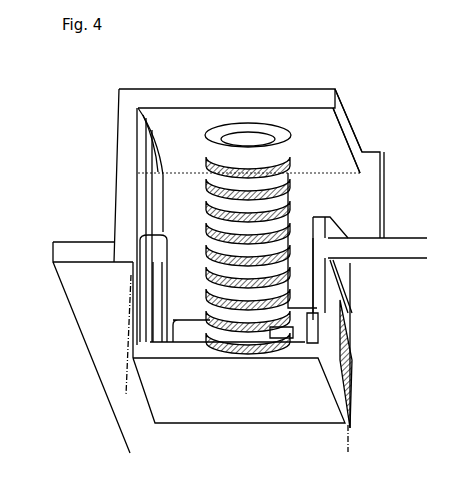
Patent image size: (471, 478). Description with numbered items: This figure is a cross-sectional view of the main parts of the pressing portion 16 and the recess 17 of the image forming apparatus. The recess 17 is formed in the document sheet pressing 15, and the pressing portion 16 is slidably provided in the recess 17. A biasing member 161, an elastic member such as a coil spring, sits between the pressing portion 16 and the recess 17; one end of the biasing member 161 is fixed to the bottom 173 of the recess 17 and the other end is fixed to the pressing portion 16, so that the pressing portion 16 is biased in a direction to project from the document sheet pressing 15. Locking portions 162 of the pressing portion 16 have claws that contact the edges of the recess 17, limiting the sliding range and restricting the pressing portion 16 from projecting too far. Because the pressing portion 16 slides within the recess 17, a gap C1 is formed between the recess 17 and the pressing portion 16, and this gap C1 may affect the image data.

The recess 17 is at (118, 117).
The bottom of the recess 173 is at (312, 130).
The biasing member 161 is at (213, 187).
The locking portions 162 is at (195, 222).
The document sheet pressing 15 is at (75, 312).
The pressing portion 16 is at (275, 425).
The gap C1 is at (142, 388).